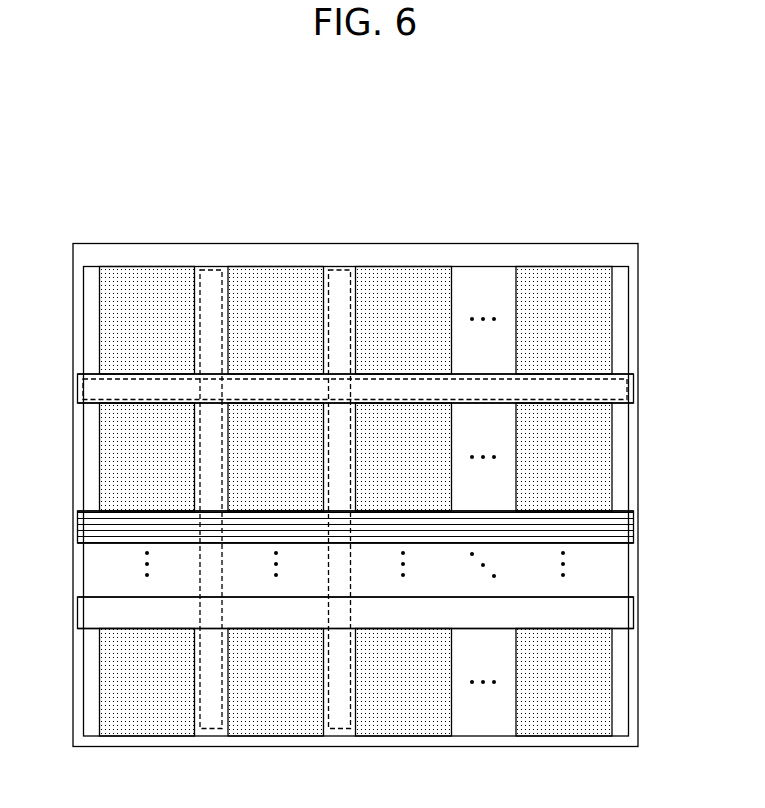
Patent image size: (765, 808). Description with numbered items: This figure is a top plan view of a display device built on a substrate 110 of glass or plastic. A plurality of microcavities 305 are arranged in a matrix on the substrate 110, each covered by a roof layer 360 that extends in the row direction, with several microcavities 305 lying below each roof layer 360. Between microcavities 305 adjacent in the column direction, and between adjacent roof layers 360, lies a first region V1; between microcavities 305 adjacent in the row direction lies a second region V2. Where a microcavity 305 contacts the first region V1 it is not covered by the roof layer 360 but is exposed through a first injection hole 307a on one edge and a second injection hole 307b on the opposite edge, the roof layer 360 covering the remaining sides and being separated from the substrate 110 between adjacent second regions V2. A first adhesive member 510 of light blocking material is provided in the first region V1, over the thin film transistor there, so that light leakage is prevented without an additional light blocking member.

The substrate 110 is at (422, 243).
The microcavity 305 is at (137, 296).
The roof layer 360 is at (83, 337).
The first adhesive member 510 is at (95, 404).
The first injection hole 307a is at (587, 403).
The second injection hole 307b is at (595, 374).
The first region V1 is at (82, 388).
The second region V2 is at (212, 270).